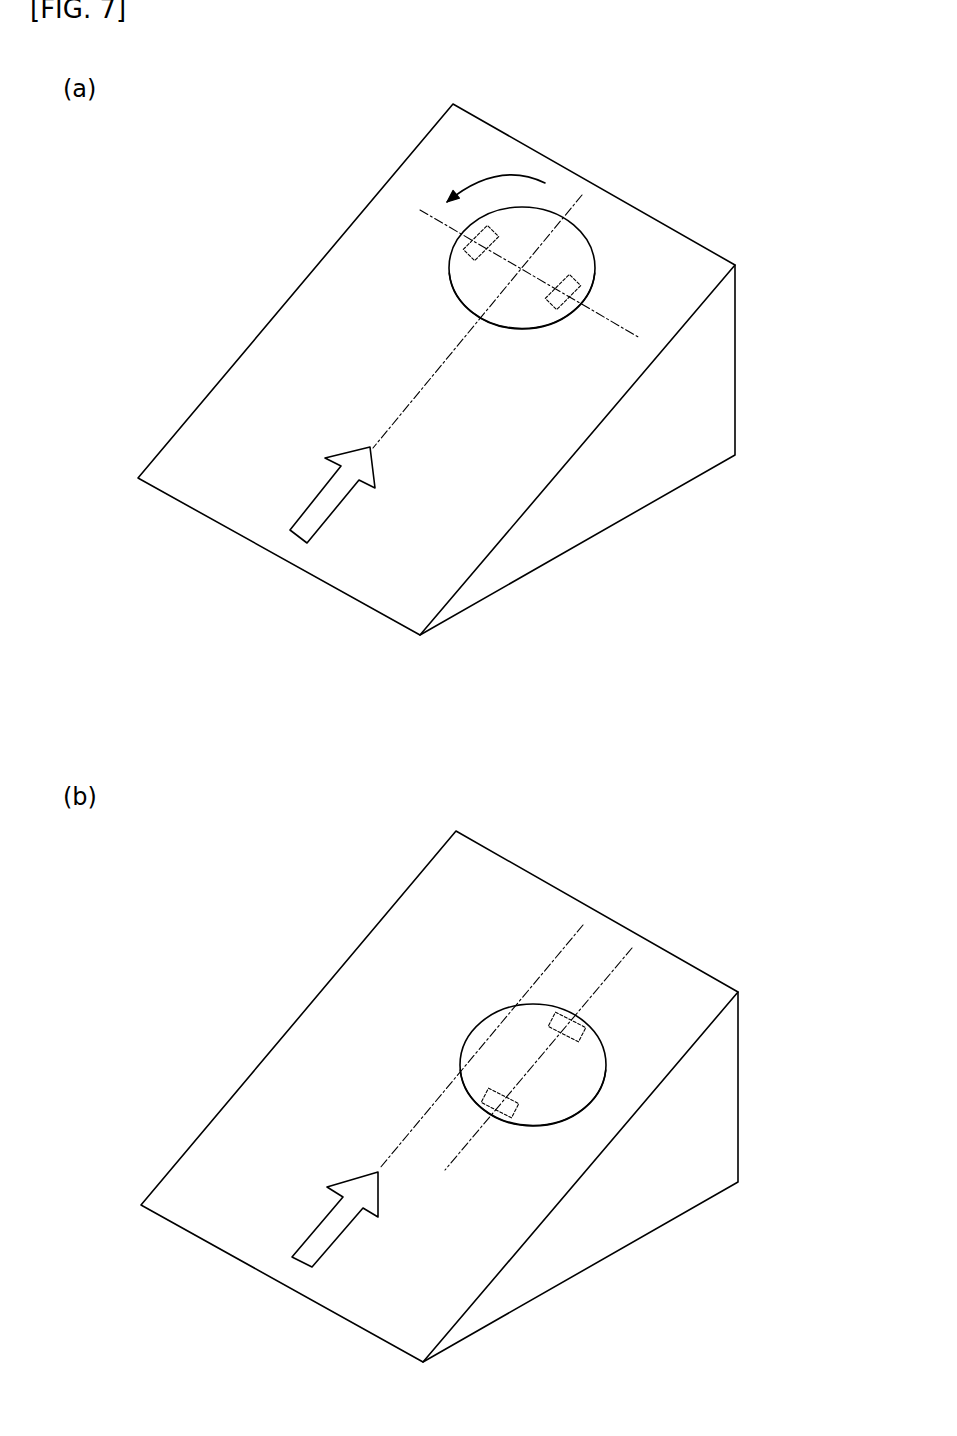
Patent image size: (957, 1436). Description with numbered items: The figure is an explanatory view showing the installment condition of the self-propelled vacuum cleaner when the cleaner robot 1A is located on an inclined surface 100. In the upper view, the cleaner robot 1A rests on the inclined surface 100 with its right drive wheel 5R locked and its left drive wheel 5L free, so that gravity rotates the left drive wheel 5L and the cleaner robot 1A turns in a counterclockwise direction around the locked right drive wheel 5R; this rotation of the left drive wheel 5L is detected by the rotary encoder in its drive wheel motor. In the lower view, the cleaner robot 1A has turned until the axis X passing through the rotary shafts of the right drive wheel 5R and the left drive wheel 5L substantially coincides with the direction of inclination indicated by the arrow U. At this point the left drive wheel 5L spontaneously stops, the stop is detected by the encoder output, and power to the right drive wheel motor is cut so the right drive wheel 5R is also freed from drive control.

The inclined surface 100 is at (213, 440).
The cleaner robot 1A is at (568, 237).
The left drive wheel 5L is at (450, 260).
The right drive wheel 5R is at (587, 262).
The axis X is at (628, 330).
The arrow U is at (317, 509).